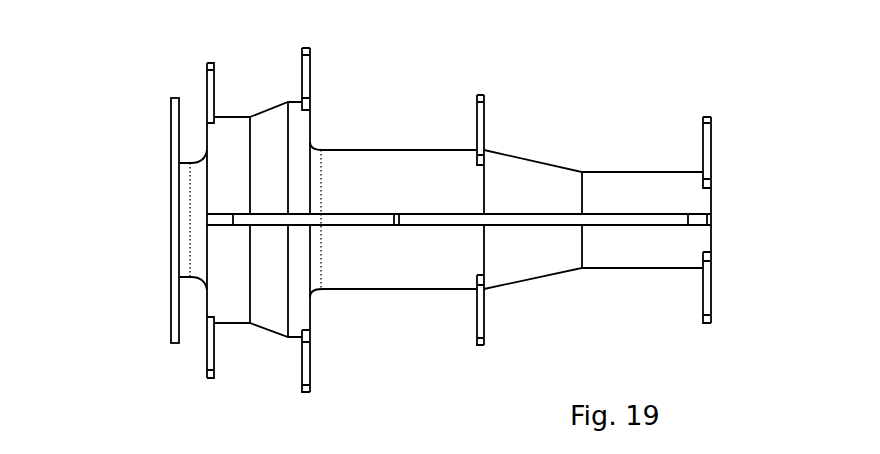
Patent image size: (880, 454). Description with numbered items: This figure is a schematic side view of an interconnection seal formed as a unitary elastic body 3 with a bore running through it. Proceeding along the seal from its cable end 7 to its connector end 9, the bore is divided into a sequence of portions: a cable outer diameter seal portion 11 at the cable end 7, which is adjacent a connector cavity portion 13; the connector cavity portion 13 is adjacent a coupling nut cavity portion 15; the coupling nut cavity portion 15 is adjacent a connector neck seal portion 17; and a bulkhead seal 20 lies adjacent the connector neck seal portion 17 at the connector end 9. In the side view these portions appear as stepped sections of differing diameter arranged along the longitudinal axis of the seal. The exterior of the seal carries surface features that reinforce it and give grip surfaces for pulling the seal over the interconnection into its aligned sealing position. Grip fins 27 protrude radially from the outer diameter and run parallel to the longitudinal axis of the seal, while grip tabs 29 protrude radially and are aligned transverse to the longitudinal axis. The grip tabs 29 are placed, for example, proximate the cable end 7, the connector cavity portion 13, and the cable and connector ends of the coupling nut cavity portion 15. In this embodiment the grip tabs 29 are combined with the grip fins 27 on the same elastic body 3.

The unitary elastic body 3 is at (535, 248).
The cable end 7 is at (733, 225).
The connector end 9 is at (149, 181).
The cable outer diameter seal portion 11 is at (620, 195).
The connector cavity portion 13 is at (366, 182).
The coupling nut cavity portion 15 is at (272, 128).
The connector neck seal portion 17 is at (193, 192).
The bulkhead seal 20 is at (171, 140).
The grip fins 27 is at (377, 222).
The grip tabs 29 is at (210, 372).